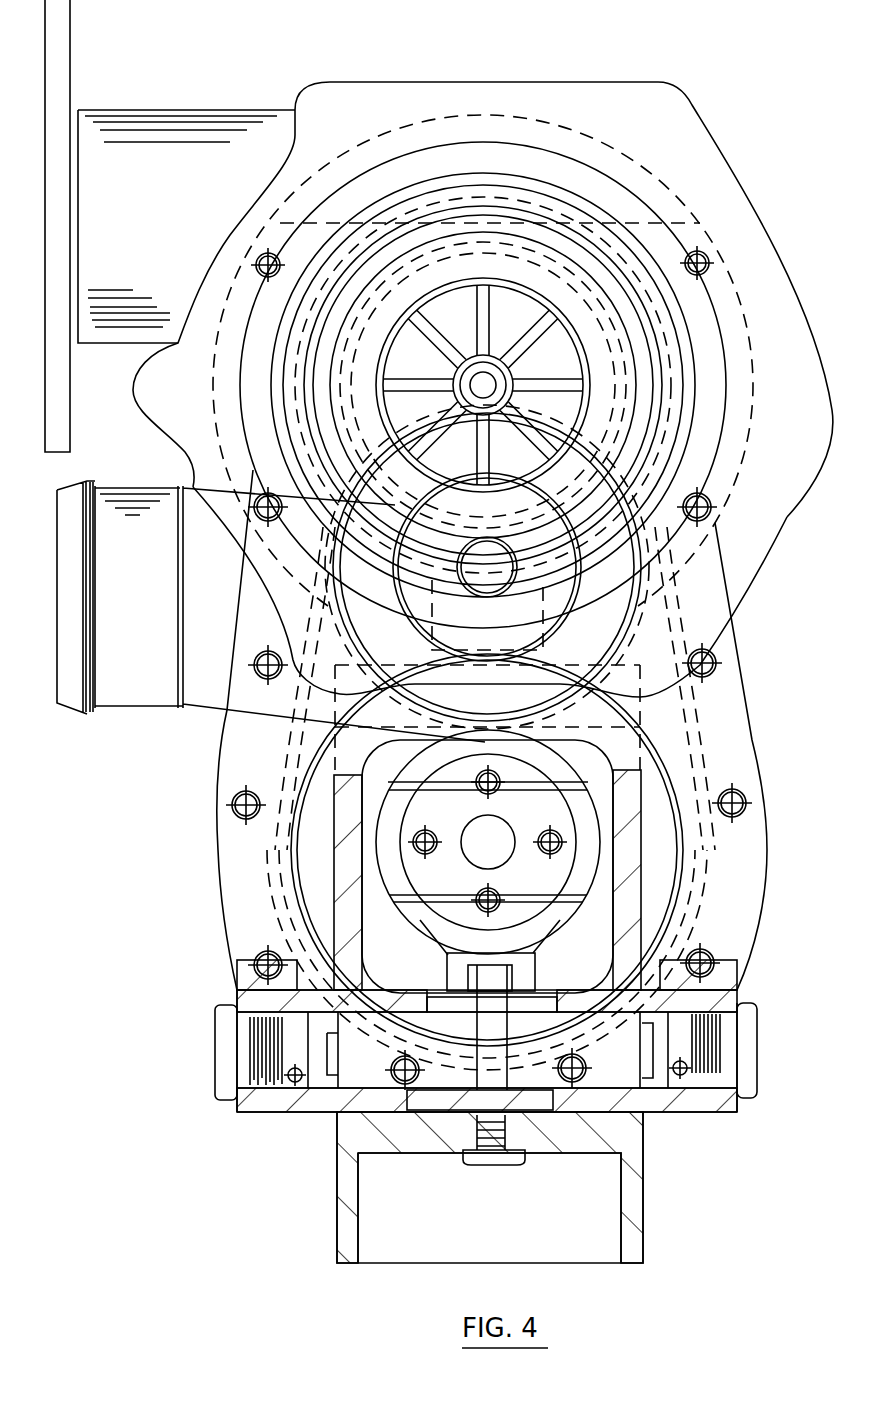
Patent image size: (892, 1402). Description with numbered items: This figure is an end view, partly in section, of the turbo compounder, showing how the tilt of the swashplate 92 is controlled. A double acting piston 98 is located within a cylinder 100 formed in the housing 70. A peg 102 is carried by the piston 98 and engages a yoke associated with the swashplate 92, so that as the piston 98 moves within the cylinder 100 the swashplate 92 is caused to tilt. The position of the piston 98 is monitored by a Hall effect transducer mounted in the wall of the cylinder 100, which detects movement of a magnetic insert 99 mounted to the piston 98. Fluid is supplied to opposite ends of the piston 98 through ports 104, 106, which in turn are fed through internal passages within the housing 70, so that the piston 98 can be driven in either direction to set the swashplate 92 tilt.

The housing 70 is at (782, 514).
The swashplate 92 is at (421, 913).
The double acting piston 98 is at (594, 1067).
The magnetic insert 99 is at (392, 1073).
The cylinder 100 is at (652, 1078).
The peg 102 is at (493, 980).
The port 104 is at (295, 1068).
The port 106 is at (683, 1077).